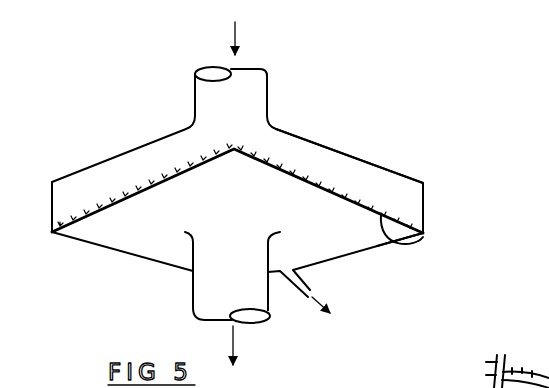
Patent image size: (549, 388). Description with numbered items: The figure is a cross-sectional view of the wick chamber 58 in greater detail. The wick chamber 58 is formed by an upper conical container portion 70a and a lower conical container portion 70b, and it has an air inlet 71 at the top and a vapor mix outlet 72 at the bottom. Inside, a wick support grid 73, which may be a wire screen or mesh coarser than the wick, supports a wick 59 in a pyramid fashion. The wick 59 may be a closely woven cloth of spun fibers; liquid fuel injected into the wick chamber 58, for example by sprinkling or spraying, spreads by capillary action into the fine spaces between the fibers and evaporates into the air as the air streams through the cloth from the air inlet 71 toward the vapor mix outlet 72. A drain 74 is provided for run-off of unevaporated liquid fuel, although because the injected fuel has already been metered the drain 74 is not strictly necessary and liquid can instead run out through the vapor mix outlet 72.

The wick chamber 58 is at (340, 120).
The wick 59 is at (425, 194).
The upper conical container portion 70a is at (386, 163).
The lower conical container portion 70b is at (377, 247).
The air inlet 71 is at (266, 71).
The vapor mix outlet 72 is at (270, 319).
The wick support grid 73 is at (421, 240).
The drain 74 is at (313, 287).